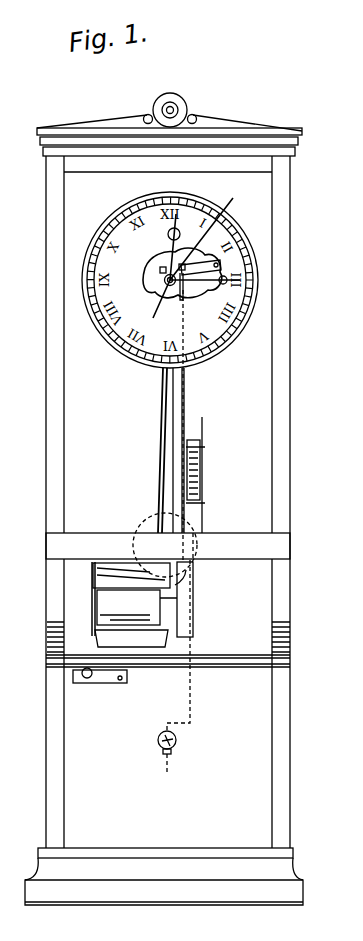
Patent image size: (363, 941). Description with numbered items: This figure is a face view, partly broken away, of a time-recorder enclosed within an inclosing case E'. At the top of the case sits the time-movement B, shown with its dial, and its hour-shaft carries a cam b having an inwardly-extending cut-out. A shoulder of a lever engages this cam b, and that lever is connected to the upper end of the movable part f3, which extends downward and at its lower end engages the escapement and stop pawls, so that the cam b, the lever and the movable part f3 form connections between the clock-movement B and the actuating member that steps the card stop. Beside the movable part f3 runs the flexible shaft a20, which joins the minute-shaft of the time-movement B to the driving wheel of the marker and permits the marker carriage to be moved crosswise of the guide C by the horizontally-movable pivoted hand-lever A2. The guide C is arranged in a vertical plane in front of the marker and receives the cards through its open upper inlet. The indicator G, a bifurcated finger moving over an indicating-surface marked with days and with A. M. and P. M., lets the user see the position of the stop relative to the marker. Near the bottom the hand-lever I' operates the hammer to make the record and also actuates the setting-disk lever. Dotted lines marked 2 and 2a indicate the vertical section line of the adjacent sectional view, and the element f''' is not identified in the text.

The time-movement B is at (233, 198).
The cam b is at (182, 290).
The arm f''' is at (211, 250).
The movable part f3 is at (185, 401).
The flexible shaft a20 is at (163, 433).
The indicator G is at (201, 470).
The wire 2 is at (165, 786).
The wire 2a is at (192, 513).
The guide C is at (118, 580).
The hand-lever A2 is at (83, 683).
The hand-lever I' is at (179, 742).
The inclosing case E' is at (301, 500).